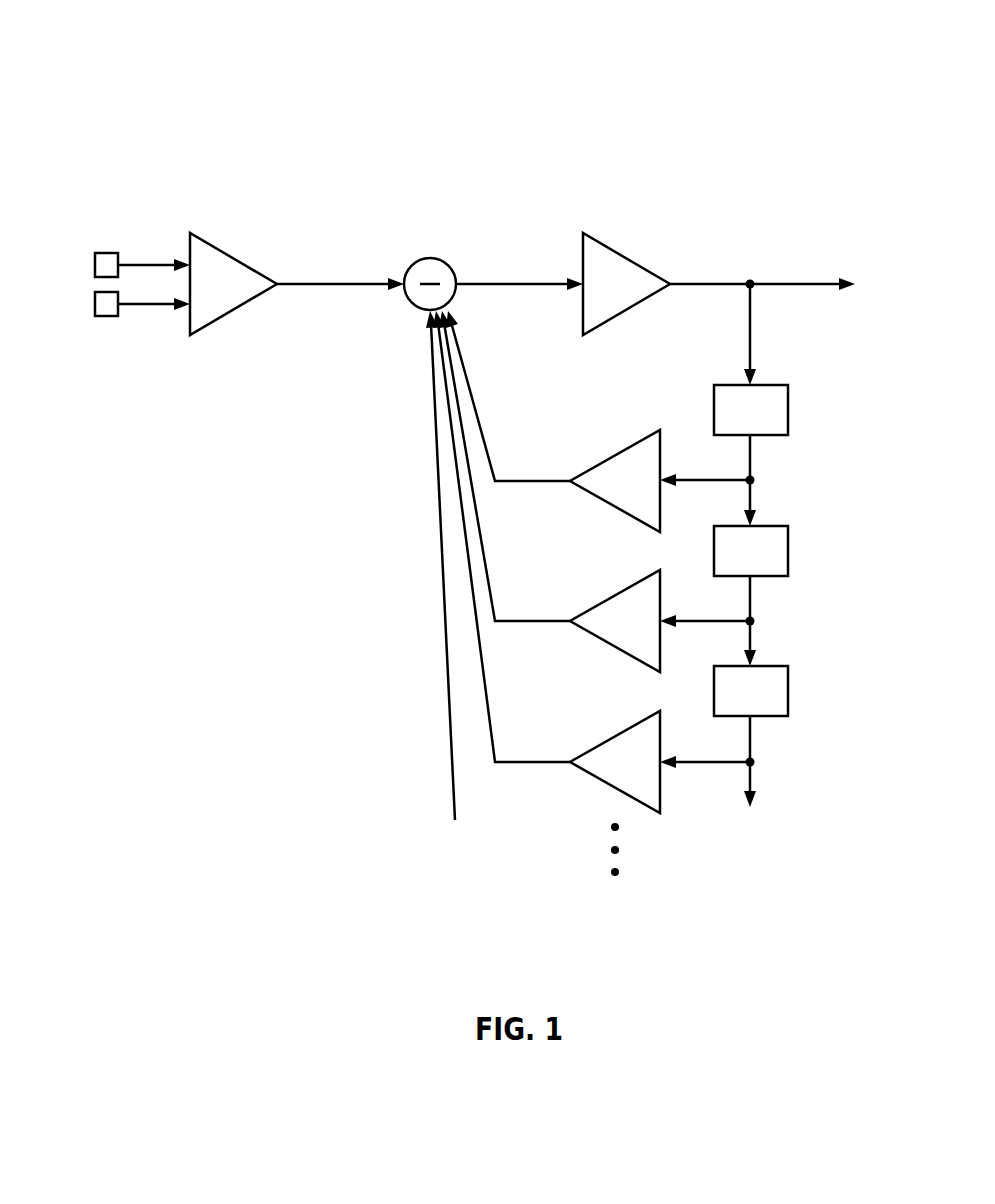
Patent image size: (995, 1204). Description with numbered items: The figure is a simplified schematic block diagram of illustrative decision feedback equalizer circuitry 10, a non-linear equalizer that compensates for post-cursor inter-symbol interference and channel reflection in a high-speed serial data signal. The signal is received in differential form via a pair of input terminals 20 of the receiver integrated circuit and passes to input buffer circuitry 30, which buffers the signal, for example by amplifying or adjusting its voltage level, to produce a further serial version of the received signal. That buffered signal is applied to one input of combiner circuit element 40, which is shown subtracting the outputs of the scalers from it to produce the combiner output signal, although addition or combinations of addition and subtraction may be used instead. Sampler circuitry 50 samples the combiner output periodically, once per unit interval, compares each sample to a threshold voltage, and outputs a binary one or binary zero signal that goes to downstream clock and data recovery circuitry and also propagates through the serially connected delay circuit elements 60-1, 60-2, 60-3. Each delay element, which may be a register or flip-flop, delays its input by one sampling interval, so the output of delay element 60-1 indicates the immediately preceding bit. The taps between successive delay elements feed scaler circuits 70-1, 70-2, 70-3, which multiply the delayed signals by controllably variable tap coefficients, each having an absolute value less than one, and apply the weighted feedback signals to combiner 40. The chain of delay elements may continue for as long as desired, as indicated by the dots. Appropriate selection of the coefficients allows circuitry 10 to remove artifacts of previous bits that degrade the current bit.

The DFE circuitry 10 is at (146, 72).
The input terminals 20 is at (83, 240).
The input buffer circuitry 30 is at (206, 237).
The combiner circuit element 40 is at (432, 258).
The sampler circuitry 50 is at (598, 237).
The delay circuit element 60-1 is at (788, 408).
The delay circuit element 60-2 is at (788, 549).
The delay circuit element 60-3 is at (788, 690).
The scaler circuitry 70-1 is at (615, 452).
The scaler circuit 70-2 is at (615, 592).
The scaler circuit 70-3 is at (615, 732).